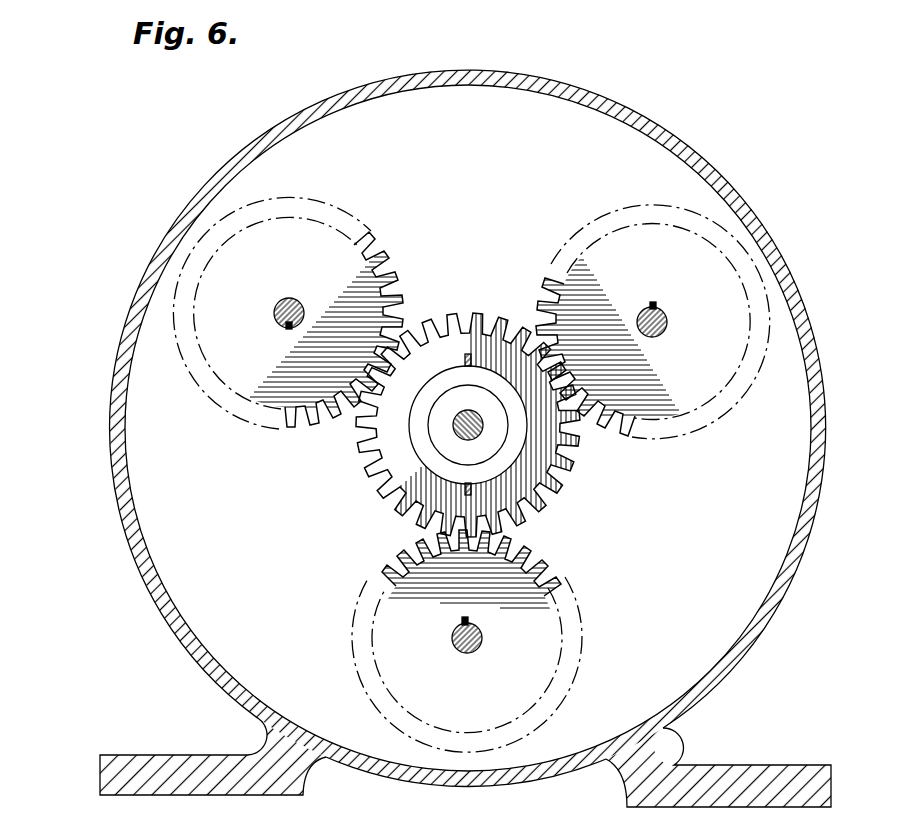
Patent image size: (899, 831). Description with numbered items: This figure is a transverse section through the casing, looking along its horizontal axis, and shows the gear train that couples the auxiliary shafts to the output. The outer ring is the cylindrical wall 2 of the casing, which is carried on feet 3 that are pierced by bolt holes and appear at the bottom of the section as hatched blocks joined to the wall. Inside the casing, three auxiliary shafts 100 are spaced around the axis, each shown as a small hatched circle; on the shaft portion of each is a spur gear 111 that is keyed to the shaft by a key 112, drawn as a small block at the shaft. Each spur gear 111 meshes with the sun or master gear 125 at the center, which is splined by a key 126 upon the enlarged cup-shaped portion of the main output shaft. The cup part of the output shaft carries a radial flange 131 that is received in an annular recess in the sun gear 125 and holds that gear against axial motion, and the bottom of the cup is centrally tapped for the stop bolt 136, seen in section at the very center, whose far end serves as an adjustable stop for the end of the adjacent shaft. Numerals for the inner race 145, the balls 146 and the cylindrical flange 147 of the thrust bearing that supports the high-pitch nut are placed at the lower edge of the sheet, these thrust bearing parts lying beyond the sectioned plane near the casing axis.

The cylindrical wall of casing 2 is at (166, 620).
The feet 3 is at (170, 790).
The auxiliary shaft 100 is at (278, 324).
The spur gear 111 is at (356, 234).
The key 112 is at (291, 330).
The sun or master gear 125 is at (563, 477).
The key 126 is at (470, 355).
The radial flange 131 is at (420, 440).
The stop bolt 136 is at (462, 438).
The inner race of thrust bearing 145 is at (360, 824).
The balls 146 is at (319, 824).
The cylindrical flange 147 is at (265, 824).